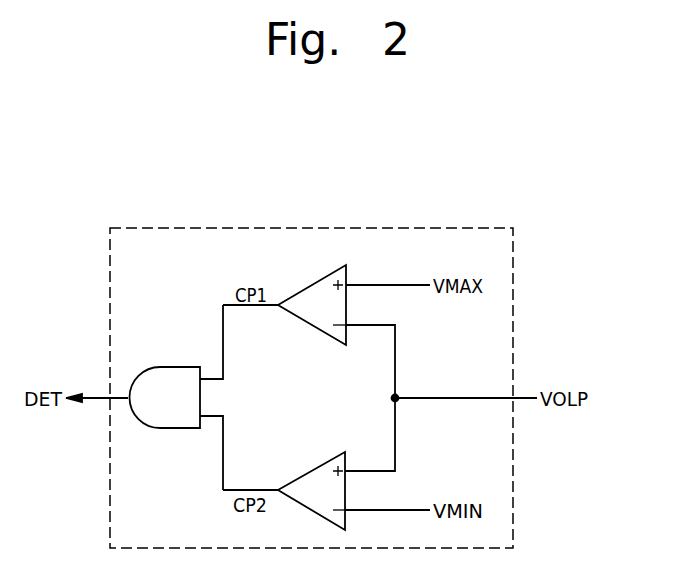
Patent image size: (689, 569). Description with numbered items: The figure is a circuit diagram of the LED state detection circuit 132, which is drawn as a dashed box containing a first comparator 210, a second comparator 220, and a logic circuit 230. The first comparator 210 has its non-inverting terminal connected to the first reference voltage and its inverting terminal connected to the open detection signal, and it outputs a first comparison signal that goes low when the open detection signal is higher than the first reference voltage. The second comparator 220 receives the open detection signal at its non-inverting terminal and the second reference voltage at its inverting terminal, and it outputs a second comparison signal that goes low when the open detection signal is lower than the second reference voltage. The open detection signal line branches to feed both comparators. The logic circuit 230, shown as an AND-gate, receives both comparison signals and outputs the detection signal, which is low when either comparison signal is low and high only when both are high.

The LED state detection circuit 132 is at (423, 228).
The first comparator 210 is at (312, 285).
The second comparator 220 is at (312, 470).
The logic circuit 230 is at (170, 366).